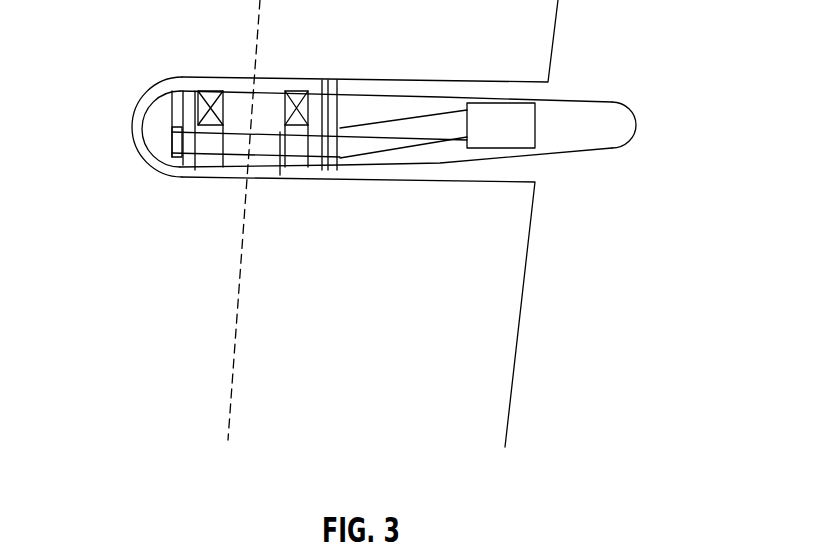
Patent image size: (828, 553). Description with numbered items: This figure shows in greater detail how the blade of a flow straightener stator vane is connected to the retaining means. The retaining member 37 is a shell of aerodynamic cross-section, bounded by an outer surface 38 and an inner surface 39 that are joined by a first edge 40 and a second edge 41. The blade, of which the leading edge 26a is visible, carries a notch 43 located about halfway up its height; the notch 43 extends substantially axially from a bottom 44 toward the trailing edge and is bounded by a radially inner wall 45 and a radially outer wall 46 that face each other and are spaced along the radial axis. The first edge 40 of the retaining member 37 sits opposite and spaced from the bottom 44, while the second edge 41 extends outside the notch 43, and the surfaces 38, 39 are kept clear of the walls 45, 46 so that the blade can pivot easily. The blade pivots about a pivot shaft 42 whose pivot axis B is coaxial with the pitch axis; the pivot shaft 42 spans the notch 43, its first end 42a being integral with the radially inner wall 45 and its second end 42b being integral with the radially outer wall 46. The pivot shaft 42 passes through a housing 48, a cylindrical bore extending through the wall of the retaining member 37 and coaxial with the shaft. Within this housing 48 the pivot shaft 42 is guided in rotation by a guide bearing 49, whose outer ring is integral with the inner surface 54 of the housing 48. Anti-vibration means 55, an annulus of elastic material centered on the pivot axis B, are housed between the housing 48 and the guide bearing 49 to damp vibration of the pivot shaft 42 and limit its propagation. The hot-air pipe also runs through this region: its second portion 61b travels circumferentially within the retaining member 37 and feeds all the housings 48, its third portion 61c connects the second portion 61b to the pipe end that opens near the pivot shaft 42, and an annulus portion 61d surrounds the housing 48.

The leading edge 26a is at (525, 312).
The retaining member 37 is at (650, 150).
The outer surface 38 is at (593, 100).
The inner surface 39 is at (570, 160).
The first edge 40 is at (145, 143).
The second edge 41 is at (636, 120).
The pivot shaft 42 is at (298, 93).
The first end 42a is at (262, 178).
The second end 42b is at (277, 88).
The notch 43 is at (155, 98).
The bottom 44 is at (130, 138).
The radially inner wall 45 is at (514, 174).
The radially outer wall 46 is at (507, 88).
The housing 48 is at (340, 126).
The guide bearing 49 is at (337, 80).
The inner surface of the housing 54 is at (178, 135).
The anti-vibration means 55 is at (332, 176).
The second portion 61b is at (478, 127).
The third portion 61c is at (400, 138).
The annulus portion 61d is at (185, 145).
The pivot axis B is at (257, 30).